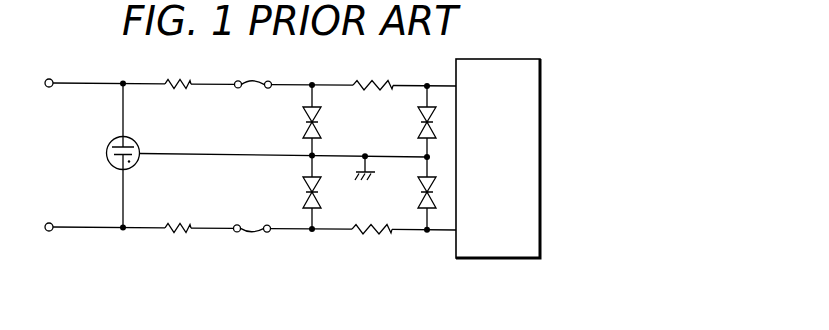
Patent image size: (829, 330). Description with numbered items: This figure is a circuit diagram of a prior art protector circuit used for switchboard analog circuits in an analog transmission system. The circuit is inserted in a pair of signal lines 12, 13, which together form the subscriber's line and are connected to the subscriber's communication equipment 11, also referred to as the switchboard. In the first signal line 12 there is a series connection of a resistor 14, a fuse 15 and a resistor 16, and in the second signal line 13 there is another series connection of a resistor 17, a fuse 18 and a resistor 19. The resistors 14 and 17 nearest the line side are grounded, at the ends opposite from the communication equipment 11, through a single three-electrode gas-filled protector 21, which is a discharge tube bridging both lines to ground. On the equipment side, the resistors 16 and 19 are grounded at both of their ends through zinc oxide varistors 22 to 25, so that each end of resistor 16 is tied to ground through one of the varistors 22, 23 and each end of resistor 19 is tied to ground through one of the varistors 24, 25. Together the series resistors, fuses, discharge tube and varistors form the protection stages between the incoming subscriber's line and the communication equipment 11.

The communication equipment 11 is at (541, 63).
The signal line 12 is at (82, 81).
The signal line 13 is at (83, 230).
The resistor 14 is at (172, 80).
The fuse 15 is at (256, 80).
The resistor 16 is at (368, 81).
The resistor 17 is at (175, 232).
The fuse 18 is at (254, 233).
The resistor 19 is at (366, 234).
The three-electrode gas-filled protector 21 is at (106, 153).
The zinc oxide varistor 22 is at (302, 121).
The zinc oxide varistor 23 is at (418, 121).
The zinc oxide varistor 24 is at (302, 192).
The zinc oxide varistor 25 is at (418, 192).